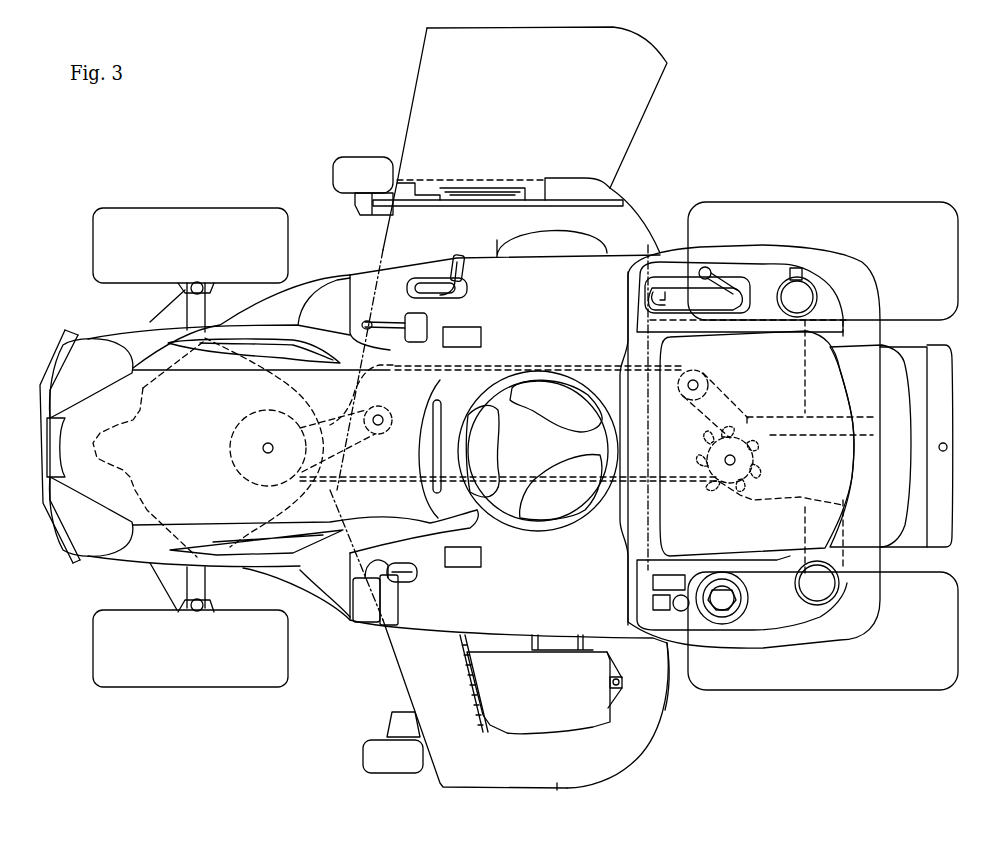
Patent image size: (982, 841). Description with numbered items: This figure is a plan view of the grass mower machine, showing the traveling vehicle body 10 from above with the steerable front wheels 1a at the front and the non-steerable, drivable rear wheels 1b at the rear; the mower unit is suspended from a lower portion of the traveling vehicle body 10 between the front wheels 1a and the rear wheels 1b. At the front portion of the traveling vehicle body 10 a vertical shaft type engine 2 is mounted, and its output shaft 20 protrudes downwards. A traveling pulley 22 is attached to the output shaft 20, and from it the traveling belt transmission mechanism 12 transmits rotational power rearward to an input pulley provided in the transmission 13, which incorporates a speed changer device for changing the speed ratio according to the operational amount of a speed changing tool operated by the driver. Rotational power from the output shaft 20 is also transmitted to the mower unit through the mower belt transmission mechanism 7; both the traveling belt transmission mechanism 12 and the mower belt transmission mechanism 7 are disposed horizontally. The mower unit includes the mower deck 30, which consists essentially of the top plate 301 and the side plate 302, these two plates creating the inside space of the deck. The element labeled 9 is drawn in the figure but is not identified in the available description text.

The front wheels 1a is at (190, 213).
The rear wheels 1b is at (880, 205).
The engine 2 is at (143, 388).
The mower belt transmission mechanism 7 is at (503, 735).
The door support strut 9 is at (538, 646).
The traveling vehicle body 10 is at (760, 247).
The traveling belt transmission mechanism 12 is at (548, 480).
The transmission 13 is at (770, 410).
The output shaft 20 is at (262, 452).
The traveling pulley 22 is at (240, 430).
The mower deck 30 is at (398, 665).
The top plate 301 is at (653, 702).
The side plate 302 is at (647, 748).